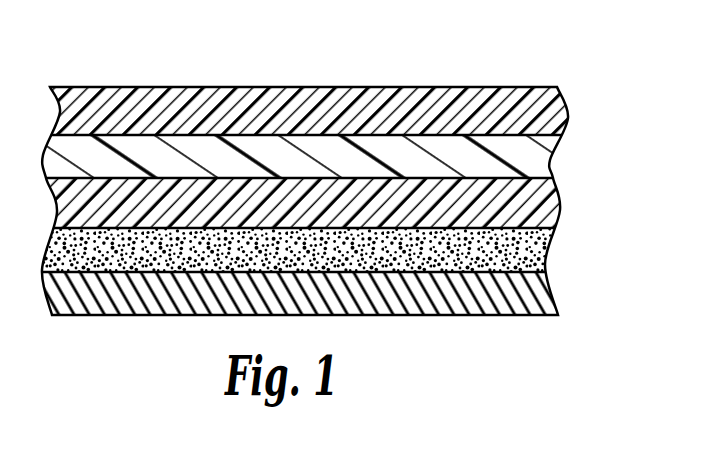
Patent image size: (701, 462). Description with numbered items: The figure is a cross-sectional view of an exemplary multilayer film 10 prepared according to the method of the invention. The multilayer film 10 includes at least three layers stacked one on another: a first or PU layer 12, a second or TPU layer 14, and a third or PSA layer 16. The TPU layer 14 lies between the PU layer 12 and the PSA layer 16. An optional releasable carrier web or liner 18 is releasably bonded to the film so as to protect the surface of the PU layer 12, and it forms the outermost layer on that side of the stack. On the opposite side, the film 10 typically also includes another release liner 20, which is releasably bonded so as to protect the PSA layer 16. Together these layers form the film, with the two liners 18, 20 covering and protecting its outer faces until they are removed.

The multilayer film 10 is at (456, 44).
The PU layer 12 is at (542, 162).
The TPU layer 14 is at (540, 202).
The PSA layer 16 is at (540, 257).
The releasable carrier web or liner 18 is at (548, 112).
The release liner 20 is at (537, 297).